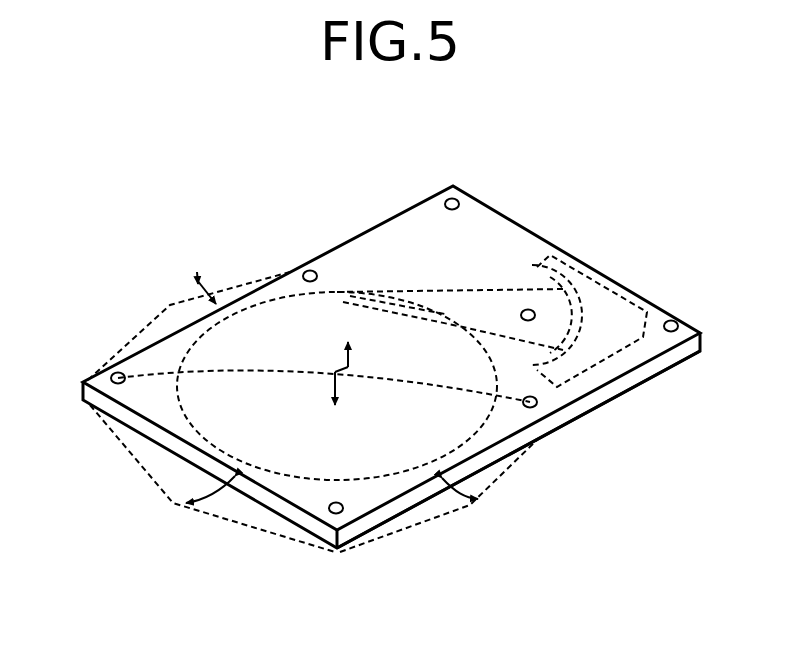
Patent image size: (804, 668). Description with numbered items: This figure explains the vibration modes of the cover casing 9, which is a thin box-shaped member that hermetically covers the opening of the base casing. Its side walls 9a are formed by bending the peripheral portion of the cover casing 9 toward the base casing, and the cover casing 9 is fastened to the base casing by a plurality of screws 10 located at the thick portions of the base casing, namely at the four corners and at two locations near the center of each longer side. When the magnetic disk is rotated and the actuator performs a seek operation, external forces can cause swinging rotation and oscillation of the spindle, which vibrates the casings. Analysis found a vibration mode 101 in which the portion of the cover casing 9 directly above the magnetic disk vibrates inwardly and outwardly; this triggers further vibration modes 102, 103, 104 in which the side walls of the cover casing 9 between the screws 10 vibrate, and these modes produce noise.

The cover casing 9 is at (545, 240).
The side walls 9a is at (635, 377).
The screws 10 is at (460, 198).
The vibration mode 101 is at (357, 363).
The vibration mode 102 is at (207, 503).
The vibration mode 103 is at (198, 280).
The vibration mode 104 is at (450, 500).